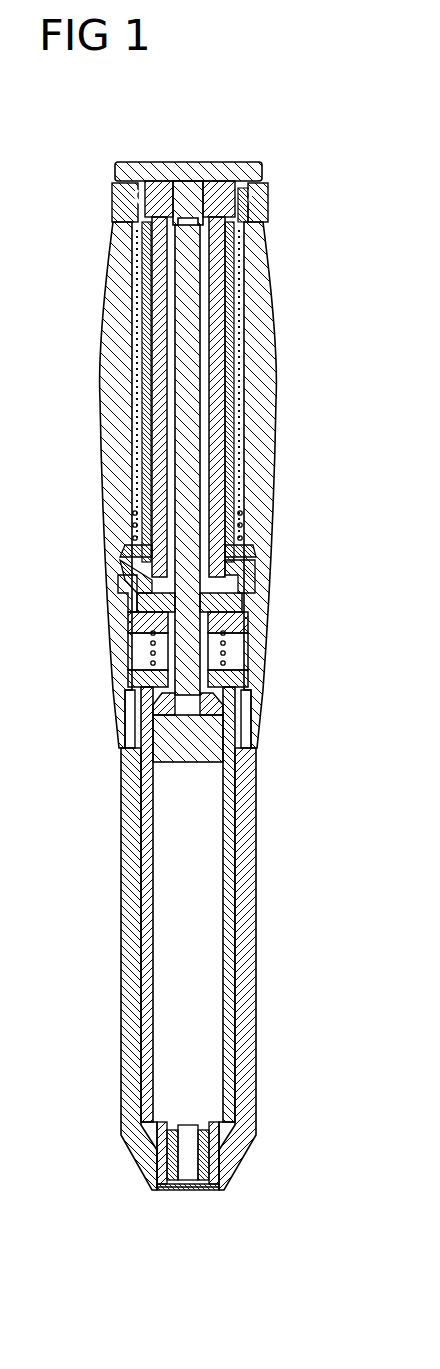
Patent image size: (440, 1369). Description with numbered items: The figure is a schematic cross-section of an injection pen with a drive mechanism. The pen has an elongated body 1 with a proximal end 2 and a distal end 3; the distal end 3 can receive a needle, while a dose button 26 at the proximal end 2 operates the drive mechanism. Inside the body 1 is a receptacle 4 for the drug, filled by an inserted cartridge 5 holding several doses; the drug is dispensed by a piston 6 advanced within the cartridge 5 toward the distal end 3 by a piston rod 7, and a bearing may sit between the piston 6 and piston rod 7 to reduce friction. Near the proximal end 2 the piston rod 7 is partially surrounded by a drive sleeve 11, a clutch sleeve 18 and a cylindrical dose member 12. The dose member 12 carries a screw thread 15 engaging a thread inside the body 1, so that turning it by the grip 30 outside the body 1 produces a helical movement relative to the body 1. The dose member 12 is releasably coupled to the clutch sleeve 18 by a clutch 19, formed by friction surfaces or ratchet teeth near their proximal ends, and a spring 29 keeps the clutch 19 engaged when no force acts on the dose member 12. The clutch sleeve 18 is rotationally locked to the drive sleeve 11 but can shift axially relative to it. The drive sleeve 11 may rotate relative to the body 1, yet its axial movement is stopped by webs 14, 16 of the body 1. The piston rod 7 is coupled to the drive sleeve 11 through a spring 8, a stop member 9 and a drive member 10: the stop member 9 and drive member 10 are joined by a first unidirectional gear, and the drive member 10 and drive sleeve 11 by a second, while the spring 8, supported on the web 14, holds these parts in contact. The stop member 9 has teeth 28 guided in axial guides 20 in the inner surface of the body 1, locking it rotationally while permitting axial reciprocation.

The body 1 is at (112, 382).
The proximal end 2 is at (227, 161).
The distal end 3 is at (212, 1190).
The receptacle 4 is at (165, 1025).
The cartridge 5 is at (227, 1018).
The piston 6 is at (182, 763).
The piston rod 7 is at (196, 495).
The spring 8 is at (246, 666).
The stop member 9 is at (246, 632).
The drive member 10 is at (138, 598).
The drive sleeve 11 is at (247, 473).
The dose member 12 is at (130, 333).
The web 14 is at (243, 703).
The screw thread 15 is at (131, 466).
The web 16 is at (240, 563).
The clutch sleeve 18 is at (150, 268).
The clutch 19 is at (126, 194).
The axial guides 20 is at (120, 673).
The dose button 26 is at (186, 163).
The teeth 28 is at (142, 637).
The spring 29 is at (128, 525).
The grip 30 is at (246, 198).